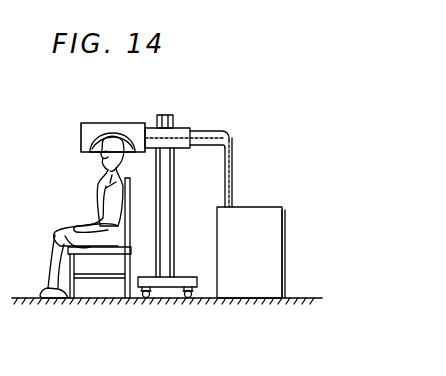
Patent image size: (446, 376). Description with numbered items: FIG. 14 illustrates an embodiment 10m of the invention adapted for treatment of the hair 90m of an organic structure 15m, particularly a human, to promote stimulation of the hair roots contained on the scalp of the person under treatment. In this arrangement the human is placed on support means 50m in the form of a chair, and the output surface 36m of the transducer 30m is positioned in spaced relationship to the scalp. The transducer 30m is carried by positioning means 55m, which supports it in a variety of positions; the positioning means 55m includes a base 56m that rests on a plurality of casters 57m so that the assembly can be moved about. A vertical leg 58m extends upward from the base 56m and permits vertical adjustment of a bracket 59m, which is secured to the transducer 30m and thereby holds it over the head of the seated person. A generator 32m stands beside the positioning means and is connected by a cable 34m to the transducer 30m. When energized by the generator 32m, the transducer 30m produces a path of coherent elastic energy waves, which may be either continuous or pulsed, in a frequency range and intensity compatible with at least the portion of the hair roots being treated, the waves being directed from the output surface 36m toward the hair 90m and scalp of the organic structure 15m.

The embodiment 10m is at (72, 134).
The organic structure 15m is at (54, 225).
The transducer 30m is at (110, 128).
The generator 32m is at (282, 209).
The cable 34m is at (233, 155).
The output surface 36m is at (92, 150).
The support means 50m is at (84, 299).
The positioning means 55m is at (184, 192).
The base 56m is at (184, 278).
The casters 57m is at (151, 298).
The vertical leg 58m is at (172, 115).
The bracket 59m is at (190, 131).
The hair 90m is at (96, 152).